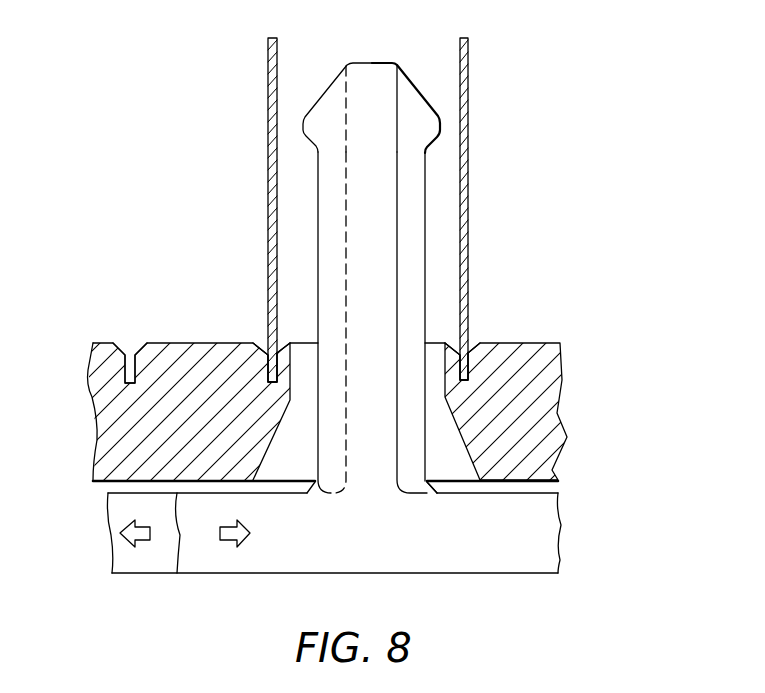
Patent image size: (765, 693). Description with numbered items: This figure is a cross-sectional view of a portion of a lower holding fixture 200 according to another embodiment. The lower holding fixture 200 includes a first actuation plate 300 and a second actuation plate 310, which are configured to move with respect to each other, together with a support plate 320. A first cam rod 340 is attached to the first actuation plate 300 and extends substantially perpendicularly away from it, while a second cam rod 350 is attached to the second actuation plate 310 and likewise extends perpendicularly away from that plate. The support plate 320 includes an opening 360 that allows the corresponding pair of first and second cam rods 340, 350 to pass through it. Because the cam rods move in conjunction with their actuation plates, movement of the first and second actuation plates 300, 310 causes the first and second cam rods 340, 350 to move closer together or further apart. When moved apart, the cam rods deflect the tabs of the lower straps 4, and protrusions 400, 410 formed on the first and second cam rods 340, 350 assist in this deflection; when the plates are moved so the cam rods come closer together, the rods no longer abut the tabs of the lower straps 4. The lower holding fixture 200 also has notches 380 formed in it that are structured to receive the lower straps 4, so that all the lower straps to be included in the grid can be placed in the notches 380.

The lower holding fixture 200 is at (136, 122).
The lower straps 4 is at (270, 108).
The protrusion 410 is at (315, 127).
The protrusion 400 is at (423, 127).
The second cam rod 350 is at (335, 223).
The first cam rod 340 is at (415, 235).
The notches 380 is at (125, 347).
The support plate 320 is at (535, 403).
The opening 360 is at (452, 460).
The first actuation plate 300 is at (342, 557).
The second actuation plate 310 is at (140, 565).